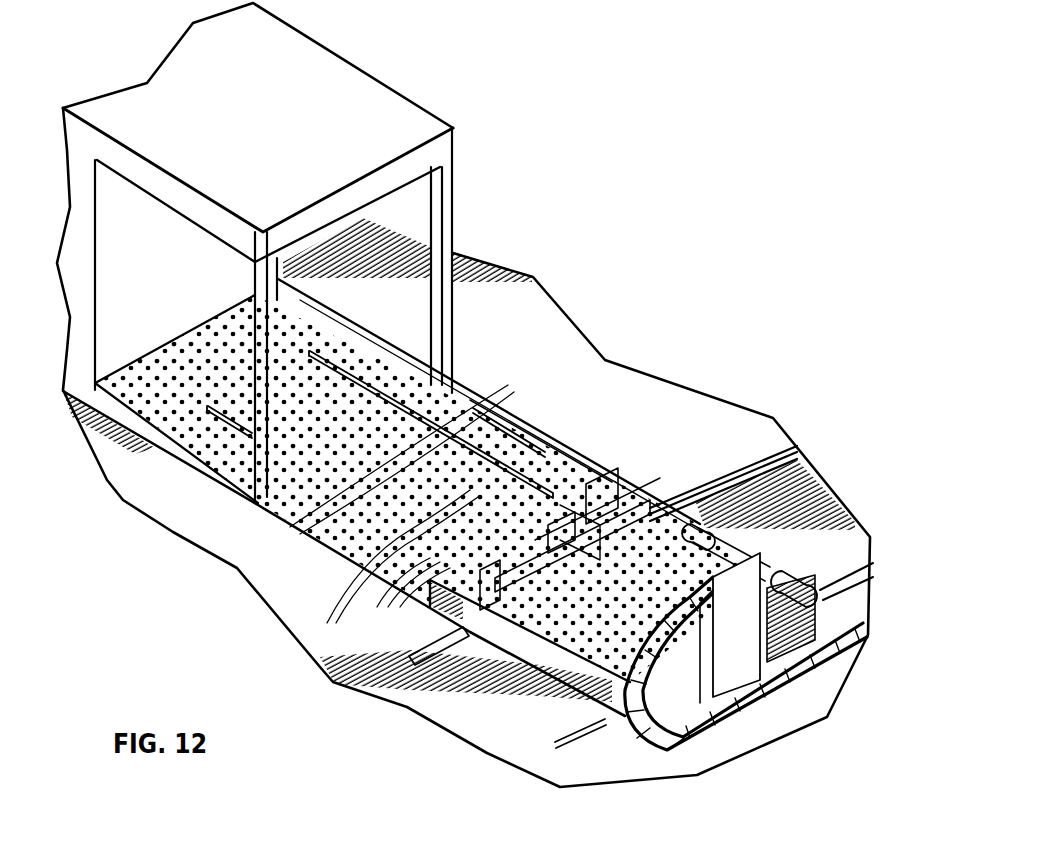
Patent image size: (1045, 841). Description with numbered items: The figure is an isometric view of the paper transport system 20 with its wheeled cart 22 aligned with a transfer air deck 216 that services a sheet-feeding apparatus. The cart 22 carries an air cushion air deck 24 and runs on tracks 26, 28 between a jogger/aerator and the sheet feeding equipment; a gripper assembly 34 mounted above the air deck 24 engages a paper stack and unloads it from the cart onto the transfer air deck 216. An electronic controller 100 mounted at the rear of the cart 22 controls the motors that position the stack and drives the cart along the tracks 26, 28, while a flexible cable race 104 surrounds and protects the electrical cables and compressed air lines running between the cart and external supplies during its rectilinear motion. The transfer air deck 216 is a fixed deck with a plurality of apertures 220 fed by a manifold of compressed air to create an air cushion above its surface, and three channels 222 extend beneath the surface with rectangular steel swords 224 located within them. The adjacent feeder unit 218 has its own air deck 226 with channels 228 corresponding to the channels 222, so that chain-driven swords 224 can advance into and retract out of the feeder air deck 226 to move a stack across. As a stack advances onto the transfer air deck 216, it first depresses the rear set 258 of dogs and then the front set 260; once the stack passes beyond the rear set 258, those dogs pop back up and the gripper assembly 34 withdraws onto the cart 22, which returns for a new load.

The paper transport system 20 is at (673, 367).
The wheeled cart 22 is at (718, 537).
The air cushion air deck 24 is at (530, 667).
The track 26 is at (453, 653).
The track 28 is at (585, 733).
The gripper assembly 34 is at (648, 462).
The electronic controller 100 is at (773, 560).
The flexible cable race 104 is at (728, 720).
The transfer air deck 216 is at (530, 433).
The feeder unit 218 is at (462, 315).
The apertures 220 is at (543, 465).
The channels 222 is at (414, 452).
The swords 224 is at (397, 567).
The feeder air deck 226 is at (334, 312).
The channels 228 is at (312, 403).
The rear set of dogs 258 is at (408, 595).
The front set of dogs 260 is at (482, 481).